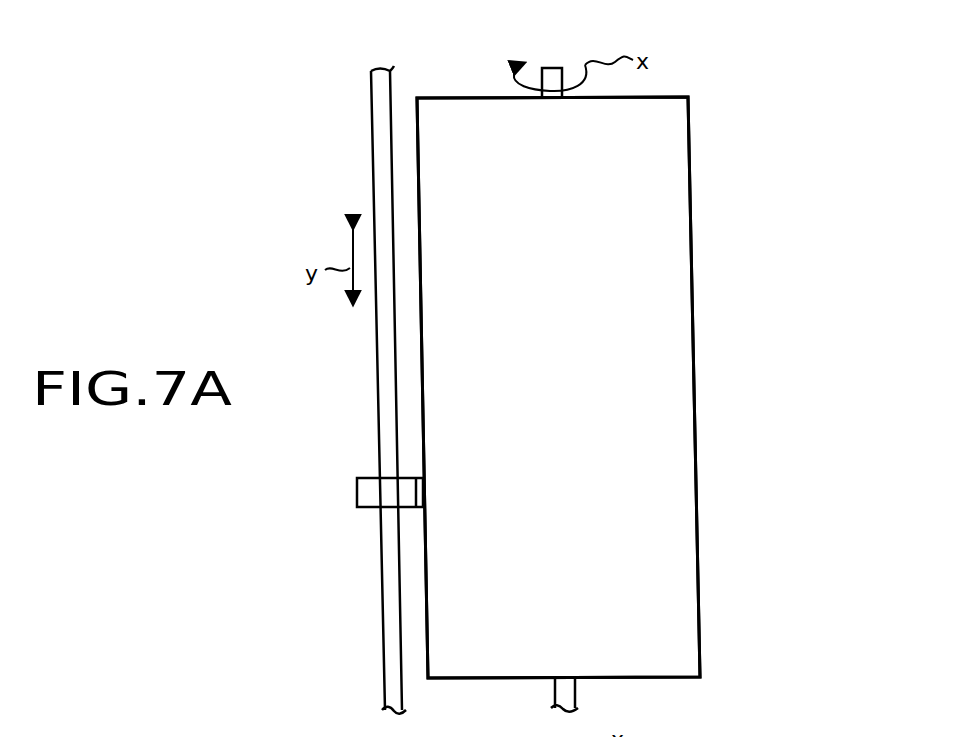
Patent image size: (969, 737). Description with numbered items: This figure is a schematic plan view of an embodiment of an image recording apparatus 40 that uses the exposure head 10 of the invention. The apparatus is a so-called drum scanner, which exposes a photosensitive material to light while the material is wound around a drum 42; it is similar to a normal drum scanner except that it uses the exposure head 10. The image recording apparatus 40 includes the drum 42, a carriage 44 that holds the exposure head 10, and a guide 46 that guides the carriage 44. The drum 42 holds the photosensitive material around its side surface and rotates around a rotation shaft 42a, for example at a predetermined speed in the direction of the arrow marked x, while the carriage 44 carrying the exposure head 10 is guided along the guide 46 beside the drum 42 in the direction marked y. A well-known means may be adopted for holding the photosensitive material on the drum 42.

The image recording apparatus 40 is at (798, 82).
The drum 42 is at (680, 334).
The rotation shaft 42a is at (551, 70).
The carriage 44 is at (357, 491).
The guide 46 is at (394, 633).
The exposure head 10 is at (385, 477).